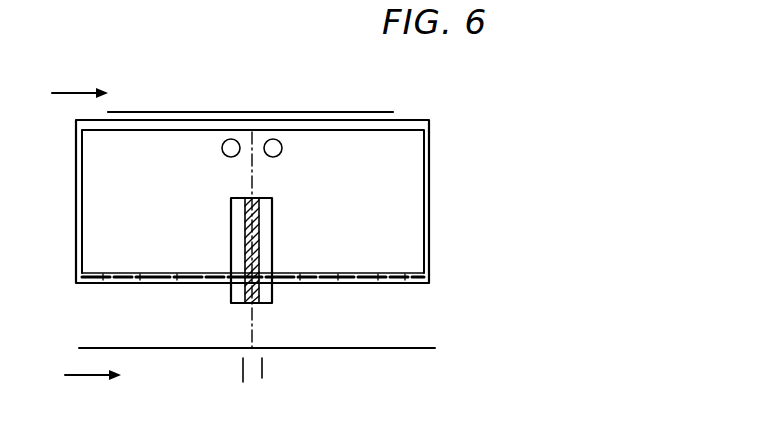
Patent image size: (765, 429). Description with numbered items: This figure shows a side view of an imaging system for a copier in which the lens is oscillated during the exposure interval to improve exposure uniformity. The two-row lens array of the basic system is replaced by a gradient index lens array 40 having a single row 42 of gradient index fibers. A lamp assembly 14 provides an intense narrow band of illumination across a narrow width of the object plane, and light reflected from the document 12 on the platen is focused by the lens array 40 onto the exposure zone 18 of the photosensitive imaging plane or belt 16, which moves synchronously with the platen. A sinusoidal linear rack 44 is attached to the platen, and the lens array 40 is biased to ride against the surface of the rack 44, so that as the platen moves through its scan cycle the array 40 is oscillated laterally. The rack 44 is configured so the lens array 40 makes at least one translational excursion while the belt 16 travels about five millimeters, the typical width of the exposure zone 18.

The document 12 is at (290, 112).
The lamp assembly 14 is at (219, 140).
The imaging plane 16 is at (358, 348).
The exposure zone 18 is at (253, 375).
The lens array 40 is at (251, 257).
The single row of gradient index fibers 42 is at (247, 287).
The sinusoidal linear rack 44 is at (417, 281).